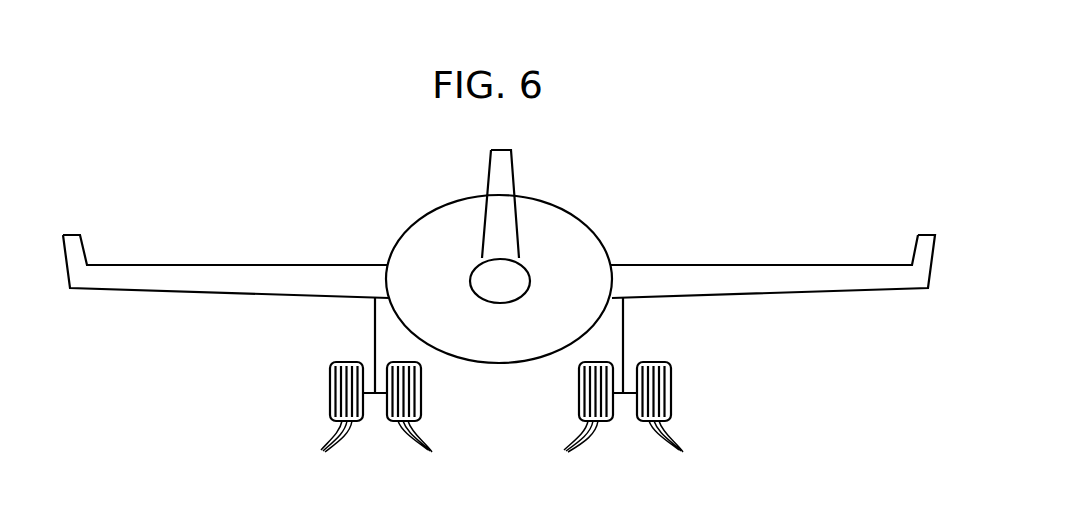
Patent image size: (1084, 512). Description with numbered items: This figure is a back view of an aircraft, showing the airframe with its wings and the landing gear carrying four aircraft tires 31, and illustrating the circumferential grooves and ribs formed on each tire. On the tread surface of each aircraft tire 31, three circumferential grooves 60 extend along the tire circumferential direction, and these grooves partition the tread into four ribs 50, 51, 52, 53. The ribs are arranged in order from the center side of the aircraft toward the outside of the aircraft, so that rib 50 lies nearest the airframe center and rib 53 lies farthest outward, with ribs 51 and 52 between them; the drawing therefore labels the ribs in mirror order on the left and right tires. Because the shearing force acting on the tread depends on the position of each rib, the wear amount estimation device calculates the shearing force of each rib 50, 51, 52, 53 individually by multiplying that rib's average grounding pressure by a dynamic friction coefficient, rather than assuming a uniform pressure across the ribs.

The aircraft tire 31 is at (330, 392).
The rib 50 is at (360, 421).
The rib 51 is at (350, 362).
The rib 52 is at (340, 362).
The rib 53 is at (330, 366).
The circumferential groove 60 is at (501, 452).